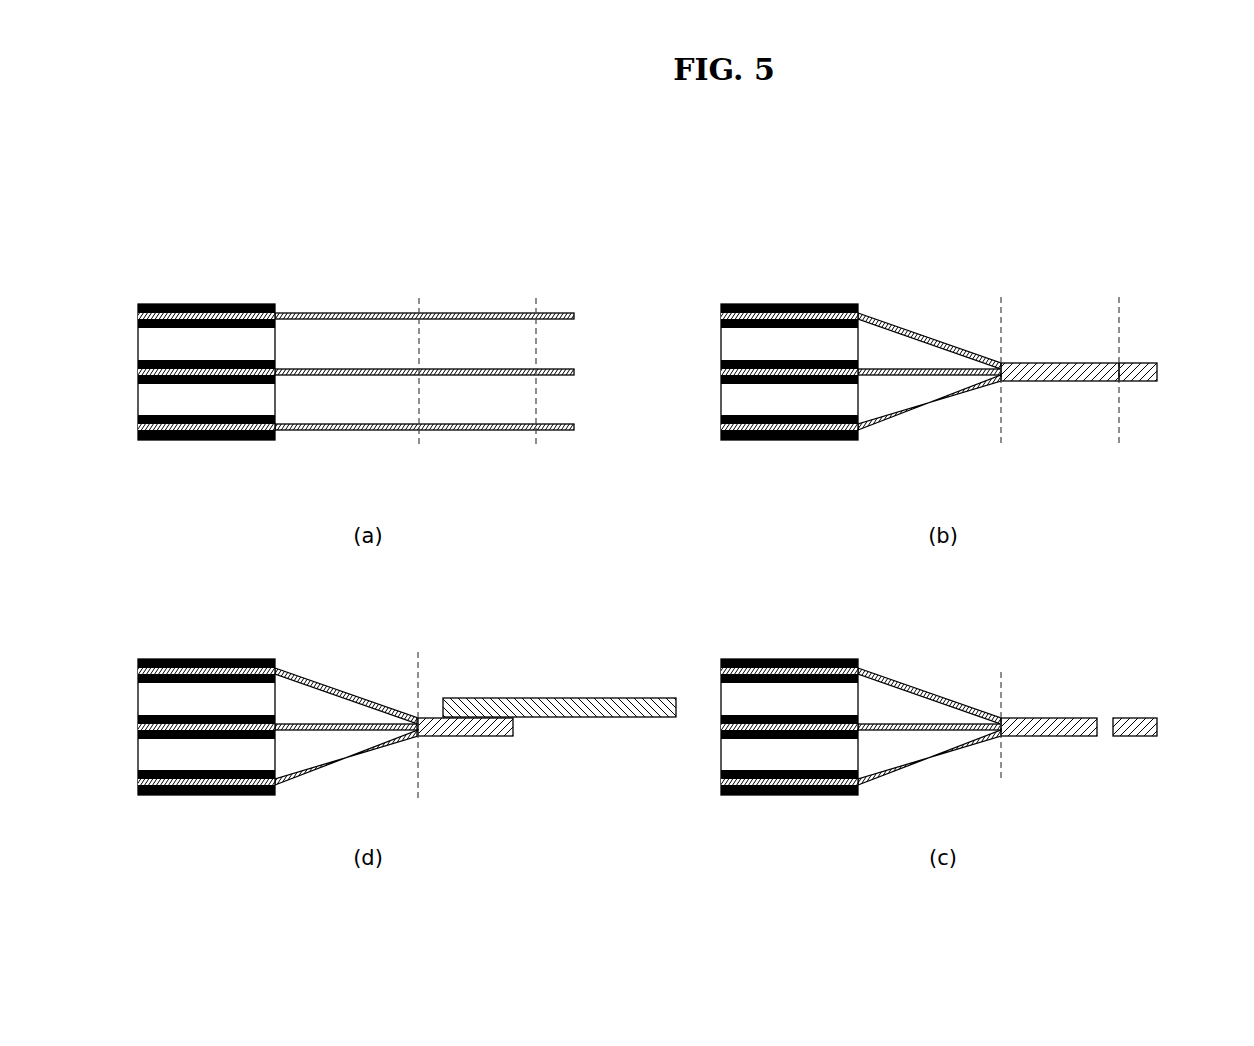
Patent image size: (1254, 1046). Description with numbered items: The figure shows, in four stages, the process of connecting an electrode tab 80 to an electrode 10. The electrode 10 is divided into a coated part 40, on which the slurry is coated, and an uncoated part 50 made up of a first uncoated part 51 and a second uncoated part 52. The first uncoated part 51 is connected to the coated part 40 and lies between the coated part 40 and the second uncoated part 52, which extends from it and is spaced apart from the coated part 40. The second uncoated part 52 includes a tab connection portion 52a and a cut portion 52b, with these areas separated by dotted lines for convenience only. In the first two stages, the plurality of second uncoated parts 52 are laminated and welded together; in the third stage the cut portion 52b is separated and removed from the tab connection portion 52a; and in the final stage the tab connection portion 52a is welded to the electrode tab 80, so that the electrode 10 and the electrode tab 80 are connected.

The electrode 10 is at (203, 452).
The coated part 40 is at (203, 290).
The uncoated part 50 is at (481, 452).
The first uncoated part 51 is at (343, 311).
The second uncoated part 52 is at (809, 503).
The tab connection portion 52a is at (451, 313).
The cut portion 52b is at (554, 313).
The electrode tab 80 is at (565, 698).